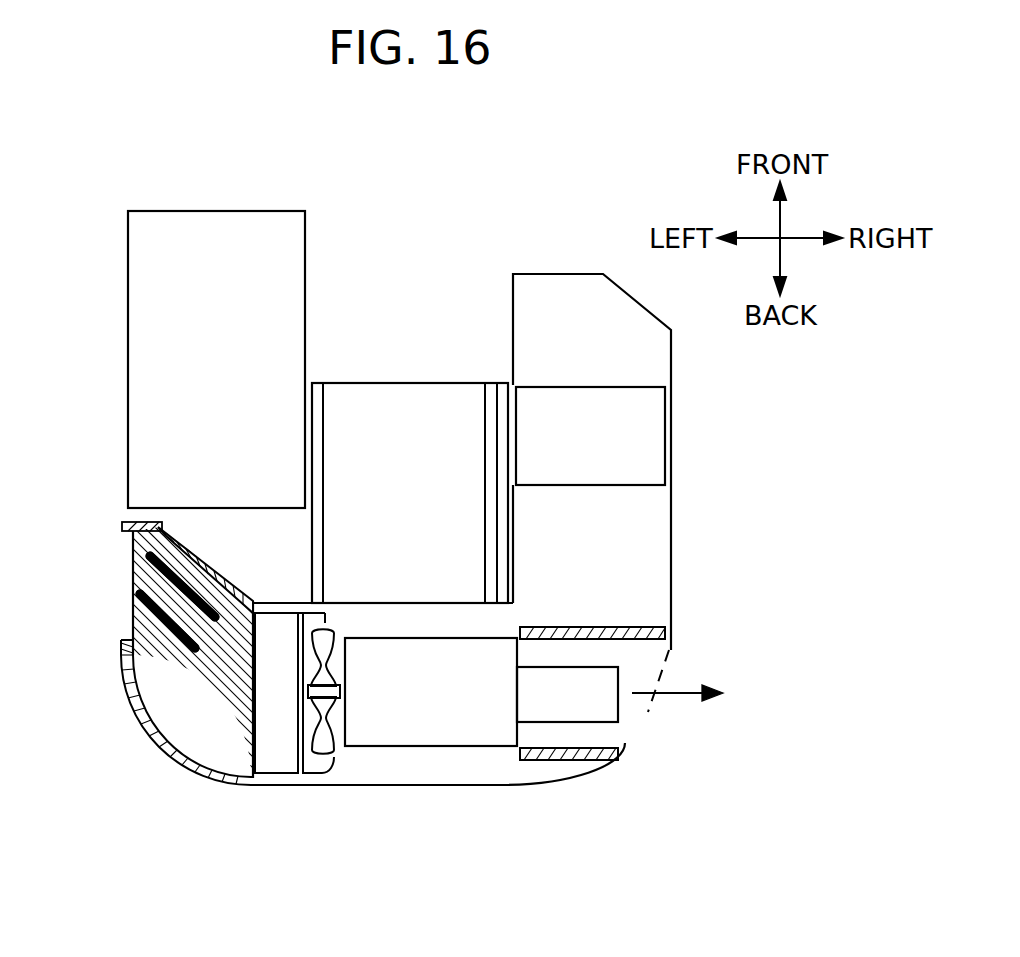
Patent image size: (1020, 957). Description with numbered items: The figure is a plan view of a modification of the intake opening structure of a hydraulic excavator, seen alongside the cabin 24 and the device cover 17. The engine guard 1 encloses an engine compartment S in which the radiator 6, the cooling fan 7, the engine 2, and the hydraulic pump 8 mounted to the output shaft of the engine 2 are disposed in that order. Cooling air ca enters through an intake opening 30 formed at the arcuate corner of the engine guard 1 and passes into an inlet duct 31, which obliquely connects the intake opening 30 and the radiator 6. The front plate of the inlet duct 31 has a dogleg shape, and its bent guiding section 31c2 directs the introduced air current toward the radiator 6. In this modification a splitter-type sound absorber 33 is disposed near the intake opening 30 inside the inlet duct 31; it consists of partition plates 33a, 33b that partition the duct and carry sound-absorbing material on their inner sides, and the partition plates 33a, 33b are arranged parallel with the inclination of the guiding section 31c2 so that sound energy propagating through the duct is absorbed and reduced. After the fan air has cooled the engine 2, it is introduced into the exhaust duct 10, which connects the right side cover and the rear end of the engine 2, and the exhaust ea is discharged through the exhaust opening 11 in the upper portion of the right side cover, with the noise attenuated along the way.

The engine guard 1 is at (432, 805).
The engine 2 is at (470, 735).
The radiator 6 is at (276, 755).
The cooling fan 7 is at (336, 770).
The hydraulic pump 8 is at (612, 705).
The exhaust duct 10 is at (642, 612).
The exhaust opening 11 is at (667, 664).
The device cover 17 is at (670, 518).
The cabin 24 is at (226, 348).
The intake opening 30 is at (118, 604).
The inlet duct 31 is at (240, 552).
The guiding section 31c2 is at (185, 556).
The sound absorber 33 is at (150, 646).
The partition plate 33a is at (212, 653).
The partition plate 33b is at (178, 572).
The cooling air ca is at (135, 574).
The exhaust ea is at (686, 700).
The engine compartment S is at (388, 766).